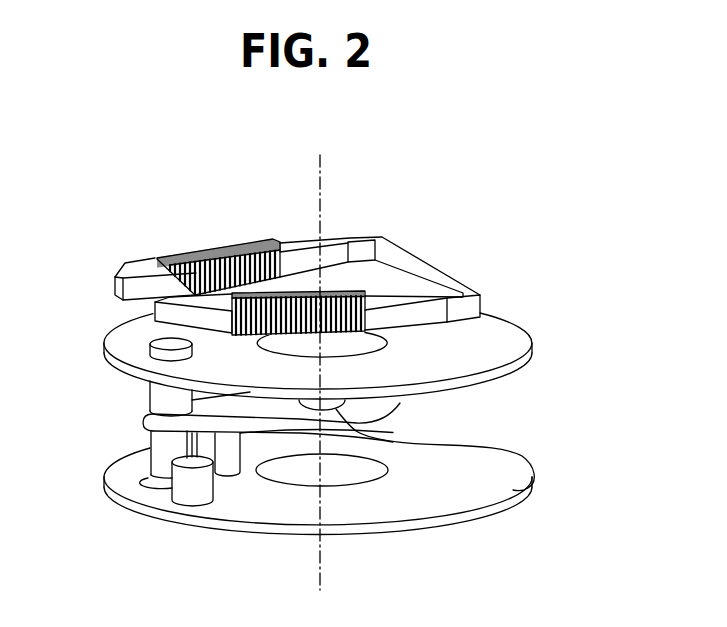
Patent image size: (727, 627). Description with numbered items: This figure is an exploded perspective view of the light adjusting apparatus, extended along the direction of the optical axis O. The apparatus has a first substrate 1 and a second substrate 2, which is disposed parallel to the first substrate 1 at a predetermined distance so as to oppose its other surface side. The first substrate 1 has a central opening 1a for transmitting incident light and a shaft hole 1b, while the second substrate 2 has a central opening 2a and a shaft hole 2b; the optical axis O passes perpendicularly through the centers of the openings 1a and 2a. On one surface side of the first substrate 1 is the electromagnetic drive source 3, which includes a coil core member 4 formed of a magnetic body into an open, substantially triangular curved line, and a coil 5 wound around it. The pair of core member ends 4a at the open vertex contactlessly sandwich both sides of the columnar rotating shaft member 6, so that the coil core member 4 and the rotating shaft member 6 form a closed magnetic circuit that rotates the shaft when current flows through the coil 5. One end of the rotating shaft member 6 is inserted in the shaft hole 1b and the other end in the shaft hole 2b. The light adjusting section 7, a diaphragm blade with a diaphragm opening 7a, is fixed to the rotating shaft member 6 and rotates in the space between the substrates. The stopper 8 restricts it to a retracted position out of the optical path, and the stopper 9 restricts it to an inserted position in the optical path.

The optical axis O is at (320, 160).
The first substrate 1 is at (517, 343).
The opening 1a is at (392, 345).
The shaft hole 1b is at (175, 357).
The second substrate 2 is at (462, 510).
The opening 2a is at (347, 460).
The shaft hole 2b is at (153, 483).
The electromagnetic drive source 3 is at (307, 188).
The coil core member 4 is at (267, 258).
The core member ends 4a is at (137, 297).
The coil 5 is at (234, 240).
The rotating shaft member 6 is at (158, 396).
The light adjusting section 7 is at (365, 441).
The diaphragm opening 7a is at (510, 447).
The stopper 8 is at (198, 487).
The stopper 9 is at (227, 447).